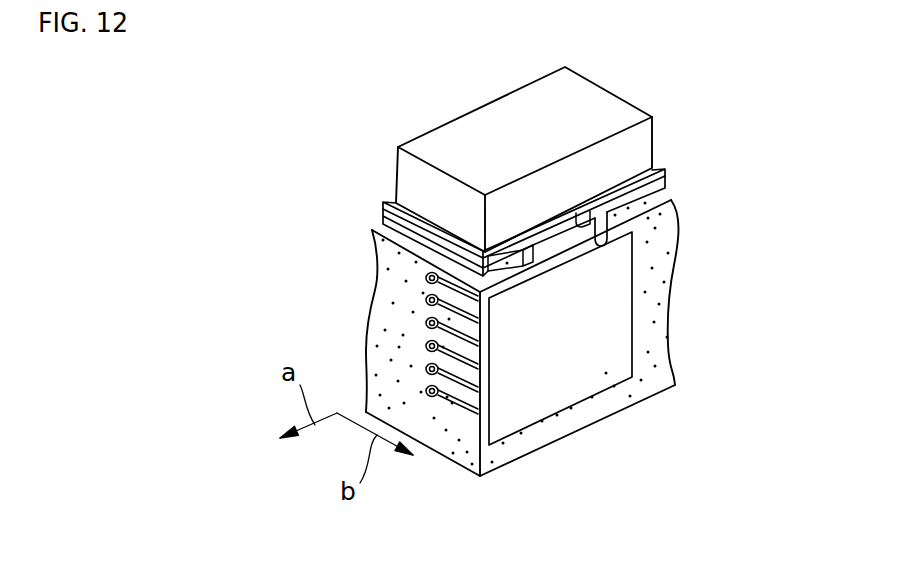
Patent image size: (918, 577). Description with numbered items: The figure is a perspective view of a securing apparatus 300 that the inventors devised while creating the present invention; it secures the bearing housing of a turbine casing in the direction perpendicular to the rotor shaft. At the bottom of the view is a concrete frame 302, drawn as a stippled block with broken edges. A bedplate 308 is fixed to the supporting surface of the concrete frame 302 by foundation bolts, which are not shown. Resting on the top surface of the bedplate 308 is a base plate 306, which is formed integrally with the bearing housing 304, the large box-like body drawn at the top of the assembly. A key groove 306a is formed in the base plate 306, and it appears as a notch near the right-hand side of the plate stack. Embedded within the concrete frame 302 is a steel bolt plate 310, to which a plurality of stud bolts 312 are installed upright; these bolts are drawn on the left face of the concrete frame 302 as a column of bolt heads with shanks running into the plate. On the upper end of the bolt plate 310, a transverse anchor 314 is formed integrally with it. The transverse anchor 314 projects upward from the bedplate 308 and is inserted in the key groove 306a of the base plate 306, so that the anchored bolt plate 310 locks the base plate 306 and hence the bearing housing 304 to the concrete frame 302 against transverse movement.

The securing apparatus 300 is at (700, 137).
The concrete frame 302 is at (387, 317).
The bearing housing 304 is at (397, 185).
The base plate 306 is at (393, 197).
The key groove 306a is at (588, 220).
The bedplate 308 is at (383, 218).
The bolt plate 310 is at (541, 402).
The stud bolts 312 is at (457, 410).
The transverse anchor 314 is at (567, 242).